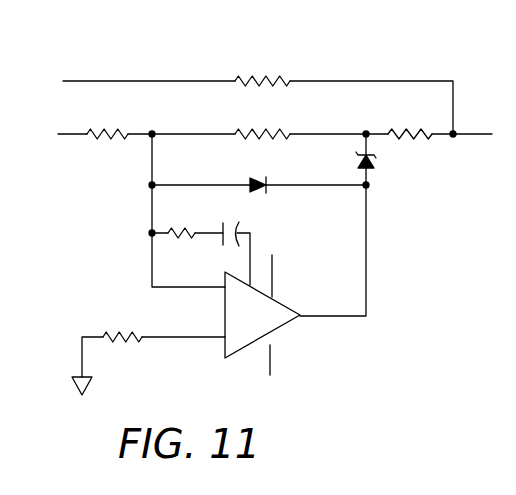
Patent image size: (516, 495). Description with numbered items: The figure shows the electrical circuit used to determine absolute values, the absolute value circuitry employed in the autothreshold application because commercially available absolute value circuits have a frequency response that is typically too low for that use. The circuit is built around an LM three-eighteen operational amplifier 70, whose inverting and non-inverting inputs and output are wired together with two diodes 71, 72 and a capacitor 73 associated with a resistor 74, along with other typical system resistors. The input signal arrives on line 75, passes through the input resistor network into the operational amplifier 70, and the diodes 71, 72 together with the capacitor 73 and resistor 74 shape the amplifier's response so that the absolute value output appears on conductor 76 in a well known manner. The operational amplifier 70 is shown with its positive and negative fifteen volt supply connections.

The operational amplifier 70 is at (222, 298).
The diode 71 is at (256, 176).
The diode 72 is at (378, 165).
The capacitor 73 is at (241, 229).
The resistor 74 is at (176, 230).
The input line 75 is at (73, 136).
The output conductor 76 is at (468, 133).